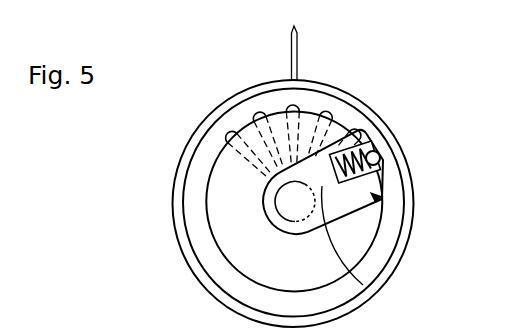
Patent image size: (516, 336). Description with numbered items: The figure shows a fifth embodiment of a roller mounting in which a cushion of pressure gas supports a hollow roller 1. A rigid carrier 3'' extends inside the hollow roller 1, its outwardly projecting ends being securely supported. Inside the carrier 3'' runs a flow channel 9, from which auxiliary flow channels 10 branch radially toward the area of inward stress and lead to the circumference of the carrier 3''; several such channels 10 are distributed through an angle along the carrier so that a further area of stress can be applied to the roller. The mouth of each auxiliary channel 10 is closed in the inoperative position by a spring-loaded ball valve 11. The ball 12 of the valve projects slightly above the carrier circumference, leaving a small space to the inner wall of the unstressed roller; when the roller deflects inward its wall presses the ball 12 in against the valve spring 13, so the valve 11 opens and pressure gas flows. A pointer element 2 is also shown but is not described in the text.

The hollow roller 1 is at (237, 94).
The pointer rod 2 is at (302, 40).
The rigid carrier 3'' is at (341, 198).
The flow channel 9 is at (290, 203).
The auxiliary flow channel 10 is at (363, 285).
The spring-loaded ball valve 11 is at (383, 198).
The ball 12 is at (380, 154).
The valve spring 13 is at (369, 150).